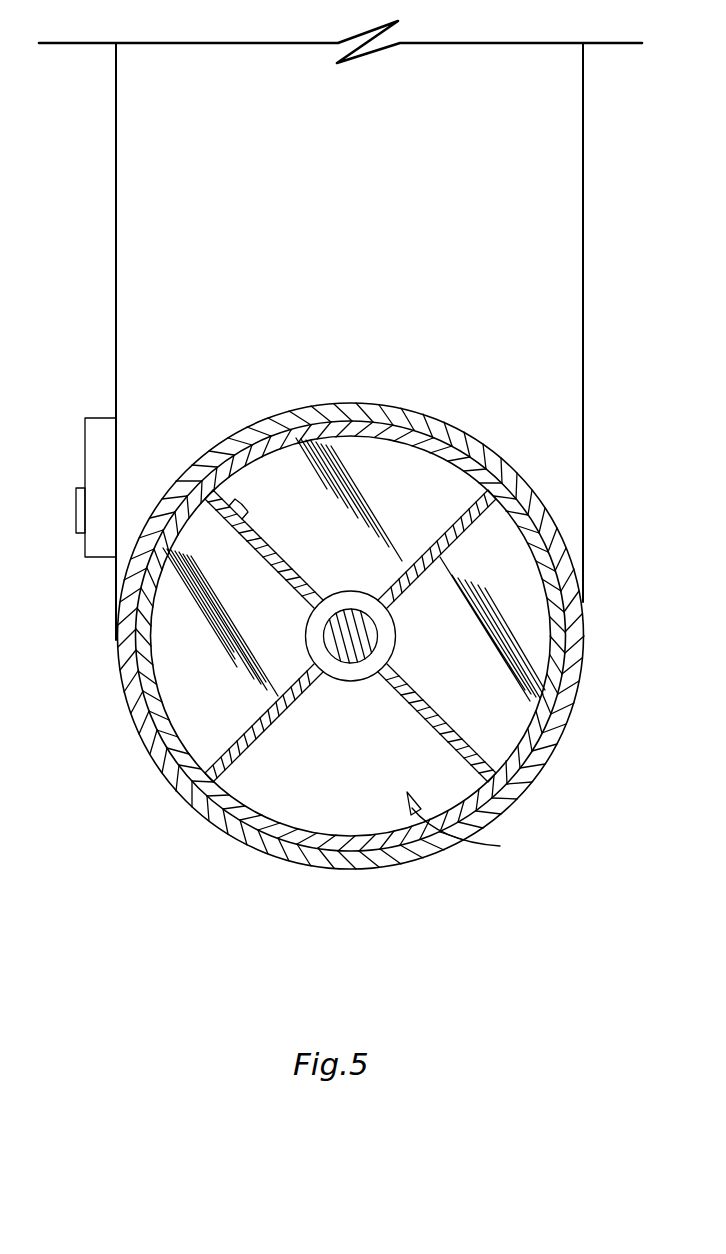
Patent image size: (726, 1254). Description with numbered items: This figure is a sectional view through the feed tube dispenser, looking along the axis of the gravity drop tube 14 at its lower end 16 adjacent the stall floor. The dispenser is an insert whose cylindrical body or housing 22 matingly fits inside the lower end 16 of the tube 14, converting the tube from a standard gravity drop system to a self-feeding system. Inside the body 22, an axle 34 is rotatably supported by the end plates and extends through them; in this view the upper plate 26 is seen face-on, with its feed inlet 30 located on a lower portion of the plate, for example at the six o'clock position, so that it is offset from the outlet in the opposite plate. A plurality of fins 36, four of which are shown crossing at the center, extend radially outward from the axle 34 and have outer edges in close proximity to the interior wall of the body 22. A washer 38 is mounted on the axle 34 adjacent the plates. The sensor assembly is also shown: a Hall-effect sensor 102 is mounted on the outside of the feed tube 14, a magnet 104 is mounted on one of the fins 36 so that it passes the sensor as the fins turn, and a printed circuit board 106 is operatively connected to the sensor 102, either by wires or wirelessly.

The gravity drop tube 14 is at (126, 219).
The lower end 16 is at (178, 797).
The cylindrical body 22 is at (148, 664).
The upper plate 26 is at (510, 568).
The feed inlet 30 is at (467, 828).
The axle 34 is at (333, 631).
The fins 36 is at (258, 537).
The washer 38 is at (397, 624).
The Hall-effect sensor 102 is at (85, 431).
The magnet 104 is at (243, 507).
The printed circuit board 106 is at (78, 498).